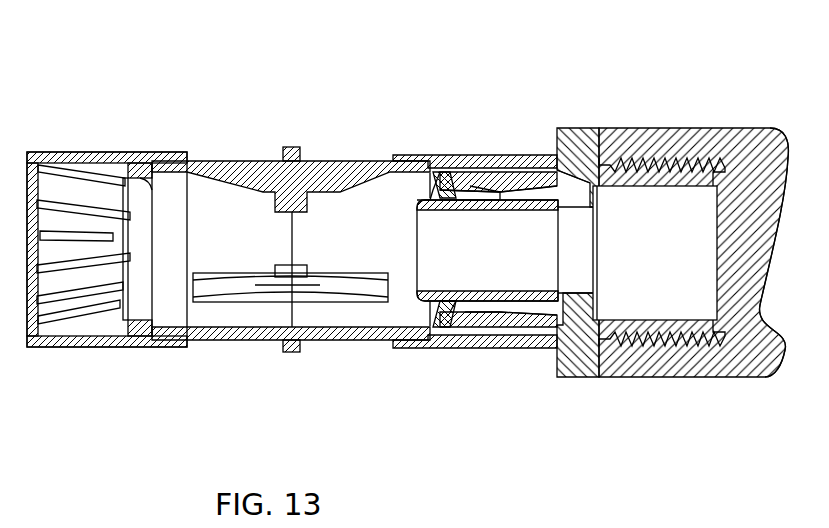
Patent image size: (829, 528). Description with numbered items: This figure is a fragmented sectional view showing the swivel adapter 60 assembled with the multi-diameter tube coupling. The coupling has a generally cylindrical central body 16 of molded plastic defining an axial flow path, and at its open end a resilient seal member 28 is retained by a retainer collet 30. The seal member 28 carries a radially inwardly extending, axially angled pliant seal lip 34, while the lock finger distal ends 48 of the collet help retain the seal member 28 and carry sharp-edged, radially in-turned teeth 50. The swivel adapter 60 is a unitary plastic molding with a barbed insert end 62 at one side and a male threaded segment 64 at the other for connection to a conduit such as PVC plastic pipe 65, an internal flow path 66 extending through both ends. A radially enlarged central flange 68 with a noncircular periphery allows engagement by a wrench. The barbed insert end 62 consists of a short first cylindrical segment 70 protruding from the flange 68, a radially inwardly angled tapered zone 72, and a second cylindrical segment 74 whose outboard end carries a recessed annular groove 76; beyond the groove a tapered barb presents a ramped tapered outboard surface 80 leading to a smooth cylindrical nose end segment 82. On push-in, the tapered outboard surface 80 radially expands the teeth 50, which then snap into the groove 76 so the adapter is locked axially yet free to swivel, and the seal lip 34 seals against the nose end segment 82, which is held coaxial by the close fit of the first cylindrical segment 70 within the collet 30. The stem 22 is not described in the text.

The central body 16 is at (248, 165).
The valve stem 22 is at (290, 205).
The seal member 28 is at (115, 332).
The retainer collet 30 is at (80, 153).
The seal lip 34 is at (146, 186).
The lock finger distal ends 48 is at (465, 312).
The teeth 50 is at (130, 272).
The swivel adapter 60 is at (550, 95).
The barbed insert end 62 is at (440, 227).
The male threaded segment 64 is at (680, 188).
The PVC plastic pipe 65 is at (737, 143).
The internal flow path 66 is at (667, 317).
The central flange 68 is at (581, 128).
The first cylindrical segment 70 is at (590, 190).
The tapered zone 72 is at (557, 168).
The second cylindrical segment 74 is at (492, 192).
The annular groove 76 is at (453, 303).
The tapered outboard surface 80 is at (443, 303).
The nose end segment 82 is at (430, 200).